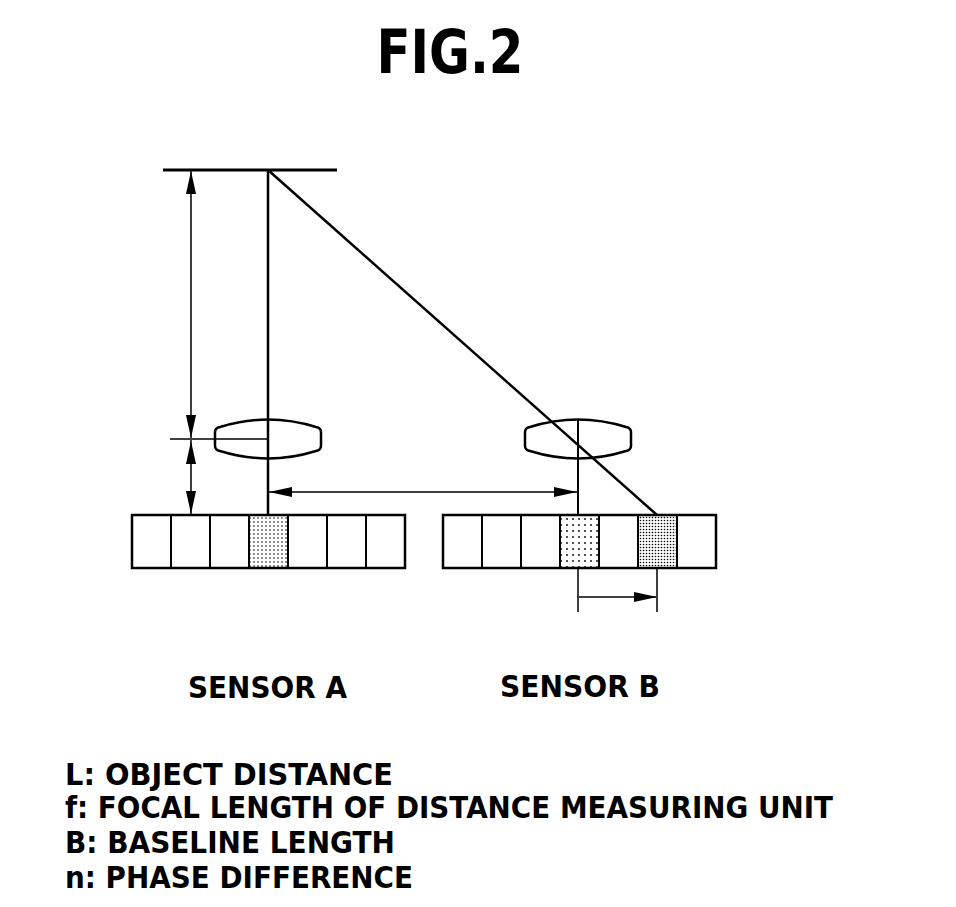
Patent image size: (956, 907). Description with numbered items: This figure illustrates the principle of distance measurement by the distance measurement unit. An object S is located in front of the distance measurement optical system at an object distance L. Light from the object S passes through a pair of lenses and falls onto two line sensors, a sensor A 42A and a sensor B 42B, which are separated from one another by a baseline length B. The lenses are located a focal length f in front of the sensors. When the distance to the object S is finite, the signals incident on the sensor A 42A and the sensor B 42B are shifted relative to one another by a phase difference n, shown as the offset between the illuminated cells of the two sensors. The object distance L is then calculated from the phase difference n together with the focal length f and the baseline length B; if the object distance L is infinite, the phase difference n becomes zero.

The sensor A 42A is at (342, 569).
The sensor B 42B is at (698, 569).
The object S is at (331, 169).
The object distance L is at (177, 304).
The focal length f is at (215, 476).
The baseline length B is at (423, 476).
The phase difference n is at (617, 601).